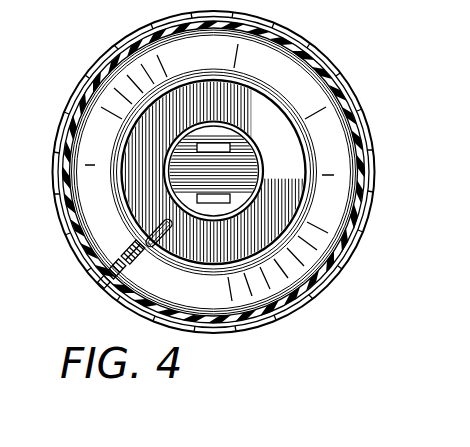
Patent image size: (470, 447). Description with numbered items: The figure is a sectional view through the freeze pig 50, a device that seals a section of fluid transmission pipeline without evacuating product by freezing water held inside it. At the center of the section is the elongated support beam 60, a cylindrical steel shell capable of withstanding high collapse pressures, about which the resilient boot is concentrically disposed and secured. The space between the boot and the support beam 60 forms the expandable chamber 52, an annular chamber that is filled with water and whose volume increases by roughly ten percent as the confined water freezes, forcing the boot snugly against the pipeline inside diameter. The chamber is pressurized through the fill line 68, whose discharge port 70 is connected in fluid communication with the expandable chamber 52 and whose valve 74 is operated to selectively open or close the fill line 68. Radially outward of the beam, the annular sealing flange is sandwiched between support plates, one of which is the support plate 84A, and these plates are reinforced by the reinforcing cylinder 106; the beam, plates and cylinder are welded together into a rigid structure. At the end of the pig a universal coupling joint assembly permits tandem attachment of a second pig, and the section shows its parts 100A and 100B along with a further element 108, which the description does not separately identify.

The freeze pig 50 is at (389, 296).
The expandable chamber 52 is at (343, 117).
The support beam 60 is at (136, 142).
The fill line 68 is at (172, 222).
The discharge port 70 is at (105, 242).
The valve 74 is at (123, 293).
The support plate 84A is at (248, 108).
The first contact 100A is at (207, 145).
The second contact 100B is at (223, 203).
The reinforcing cylinder 106 is at (262, 155).
The hub 108 is at (256, 172).